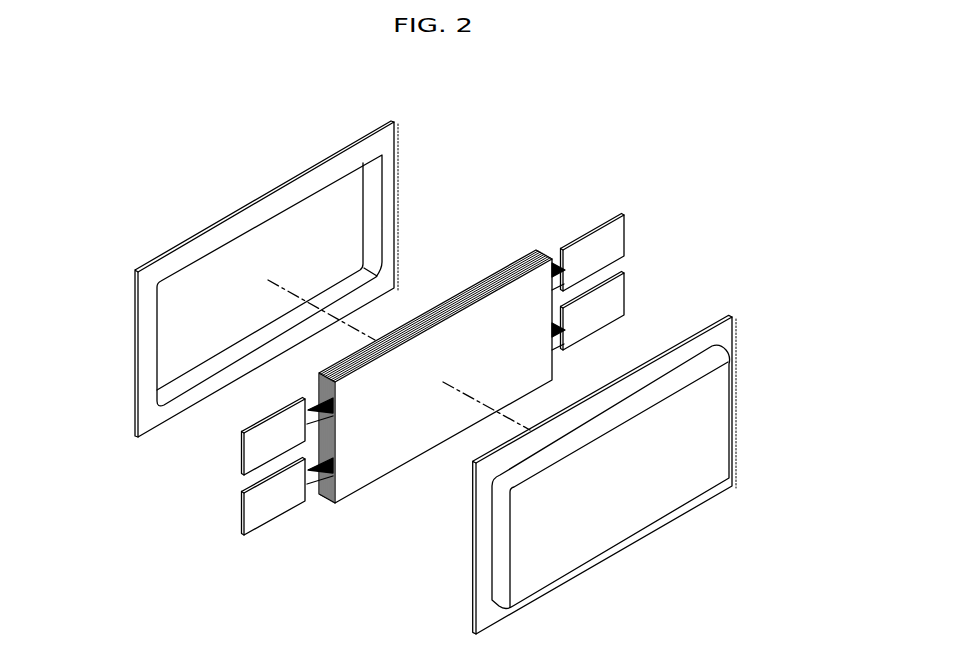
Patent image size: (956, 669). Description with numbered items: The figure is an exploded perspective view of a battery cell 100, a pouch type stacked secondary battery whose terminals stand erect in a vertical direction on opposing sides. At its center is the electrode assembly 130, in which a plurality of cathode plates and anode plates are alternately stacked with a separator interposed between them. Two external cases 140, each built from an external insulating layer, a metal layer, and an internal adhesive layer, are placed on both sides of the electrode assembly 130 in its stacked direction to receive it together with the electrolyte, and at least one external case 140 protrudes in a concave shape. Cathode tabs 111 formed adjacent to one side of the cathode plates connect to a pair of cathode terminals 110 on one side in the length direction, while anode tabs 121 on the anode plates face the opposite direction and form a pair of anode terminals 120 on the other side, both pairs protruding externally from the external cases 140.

The battery cell 100 is at (579, 139).
The cathode terminal 110 is at (244, 458).
The cathode tab 111 is at (325, 501).
The anode terminal 120 is at (626, 232).
The anode tab 121 is at (560, 341).
The electrode assembly 130 is at (478, 282).
The external case 140 is at (252, 204).